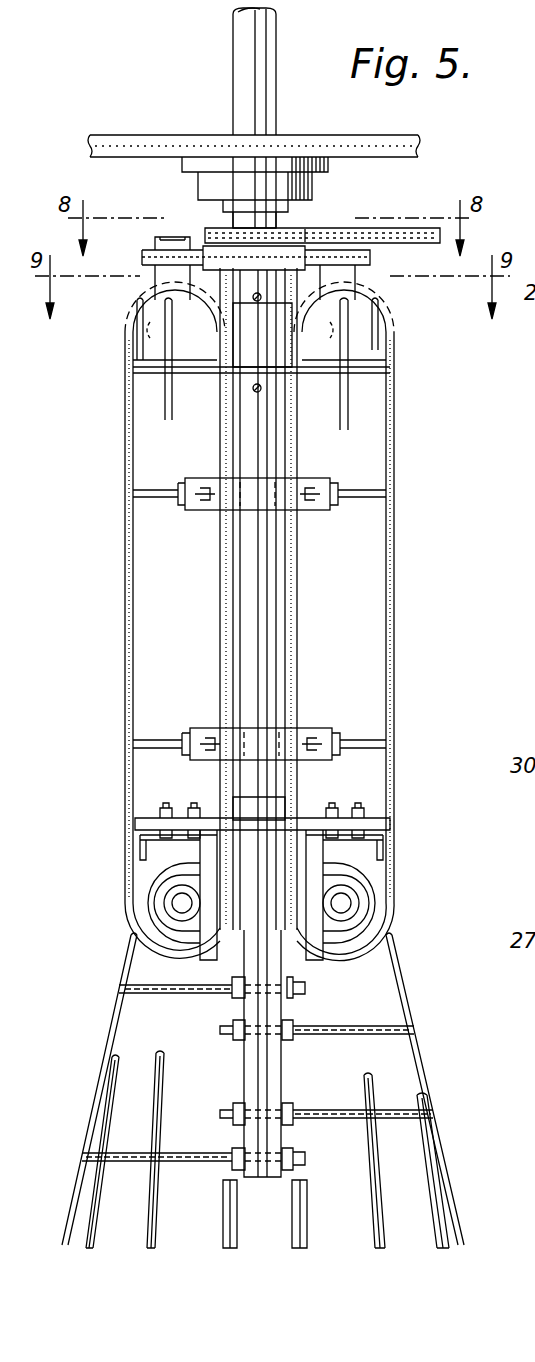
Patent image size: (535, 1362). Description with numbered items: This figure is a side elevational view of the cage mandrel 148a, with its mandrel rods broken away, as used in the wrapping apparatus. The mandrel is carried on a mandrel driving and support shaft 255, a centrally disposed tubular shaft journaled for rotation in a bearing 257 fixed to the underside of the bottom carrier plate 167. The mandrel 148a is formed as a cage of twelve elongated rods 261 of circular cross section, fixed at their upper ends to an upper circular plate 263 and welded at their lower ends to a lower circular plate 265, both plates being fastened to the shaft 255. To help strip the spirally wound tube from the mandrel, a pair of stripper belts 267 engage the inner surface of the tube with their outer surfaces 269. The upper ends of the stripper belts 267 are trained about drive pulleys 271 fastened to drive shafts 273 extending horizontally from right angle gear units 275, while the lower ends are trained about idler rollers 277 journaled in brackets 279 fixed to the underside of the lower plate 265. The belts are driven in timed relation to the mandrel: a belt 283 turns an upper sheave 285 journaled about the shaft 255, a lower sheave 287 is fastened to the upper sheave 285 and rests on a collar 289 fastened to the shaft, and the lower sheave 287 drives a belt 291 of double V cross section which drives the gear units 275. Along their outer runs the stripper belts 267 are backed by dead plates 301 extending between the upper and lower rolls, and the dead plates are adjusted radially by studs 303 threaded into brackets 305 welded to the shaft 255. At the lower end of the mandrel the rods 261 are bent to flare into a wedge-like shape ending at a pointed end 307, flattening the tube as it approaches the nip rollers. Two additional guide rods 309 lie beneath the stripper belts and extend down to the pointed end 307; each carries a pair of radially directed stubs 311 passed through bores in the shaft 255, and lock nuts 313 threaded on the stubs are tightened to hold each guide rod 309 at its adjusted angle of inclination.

The cage mandrel 148a is at (404, 600).
The bottom carrier plate 167 is at (112, 140).
The mandrel driving and support shaft 255 is at (243, 22).
The bearing 257 is at (290, 185).
The elongated rods 261 is at (160, 325).
The upper circular plate 263 is at (135, 408).
The lower circular plate 265 is at (152, 818).
The stripper belts 267 is at (125, 622).
The outer surfaces 269 is at (133, 668).
The drive pulleys 271 is at (130, 340).
The drive shafts 273 is at (114, 360).
The right angle gear units 275 is at (135, 397).
The idler rollers 277 is at (145, 900).
The brackets 279 is at (165, 912).
The belt 283 is at (382, 240).
The upper sheave 285 is at (215, 230).
The lower sheave 287 is at (158, 280).
The collar 289 is at (223, 373).
The double V belt 291 is at (312, 244).
The dead plates 301 is at (133, 458).
The studs 303 is at (140, 497).
The brackets 305 is at (298, 480).
The pointed end 307 is at (88, 1252).
The guide rods 309 is at (108, 1038).
The stubs 311 is at (143, 994).
The lock nuts 313 is at (293, 998).